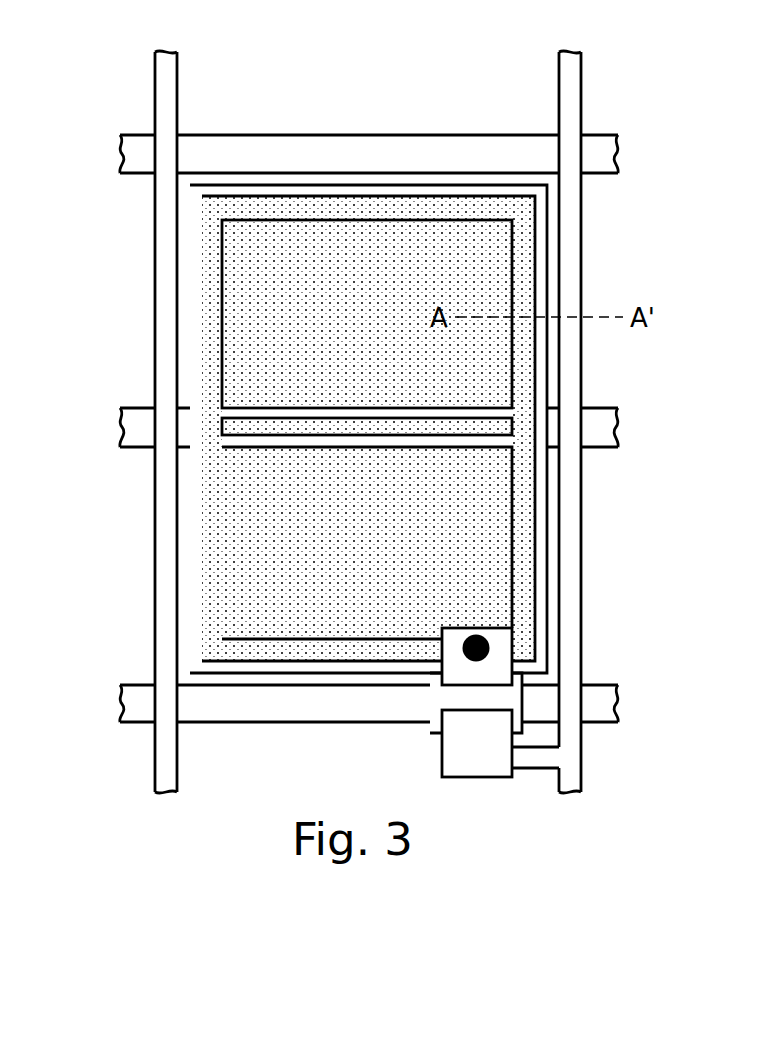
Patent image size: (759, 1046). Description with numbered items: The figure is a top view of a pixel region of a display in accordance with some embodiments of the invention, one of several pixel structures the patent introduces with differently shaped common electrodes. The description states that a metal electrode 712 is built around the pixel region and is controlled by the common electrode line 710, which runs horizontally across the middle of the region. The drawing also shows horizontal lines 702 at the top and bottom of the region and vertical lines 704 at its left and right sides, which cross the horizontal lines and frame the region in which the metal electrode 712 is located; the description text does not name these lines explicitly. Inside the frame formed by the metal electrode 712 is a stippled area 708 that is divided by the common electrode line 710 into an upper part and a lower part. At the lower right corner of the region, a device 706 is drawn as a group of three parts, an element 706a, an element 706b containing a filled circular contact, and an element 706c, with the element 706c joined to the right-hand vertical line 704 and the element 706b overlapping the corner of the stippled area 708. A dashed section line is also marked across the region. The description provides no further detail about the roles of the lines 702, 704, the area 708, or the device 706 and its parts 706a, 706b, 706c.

The gate line 702 is at (610, 157).
The data line 704 is at (170, 63).
The thin film transistor 706 is at (690, 655).
The active layer 706a is at (502, 698).
The drain electrode 706b is at (493, 660).
The source electrode 706c is at (502, 755).
The pixel electrode 708 is at (245, 338).
The common electrode line 710 is at (612, 432).
The metal electrode 712 is at (213, 208).